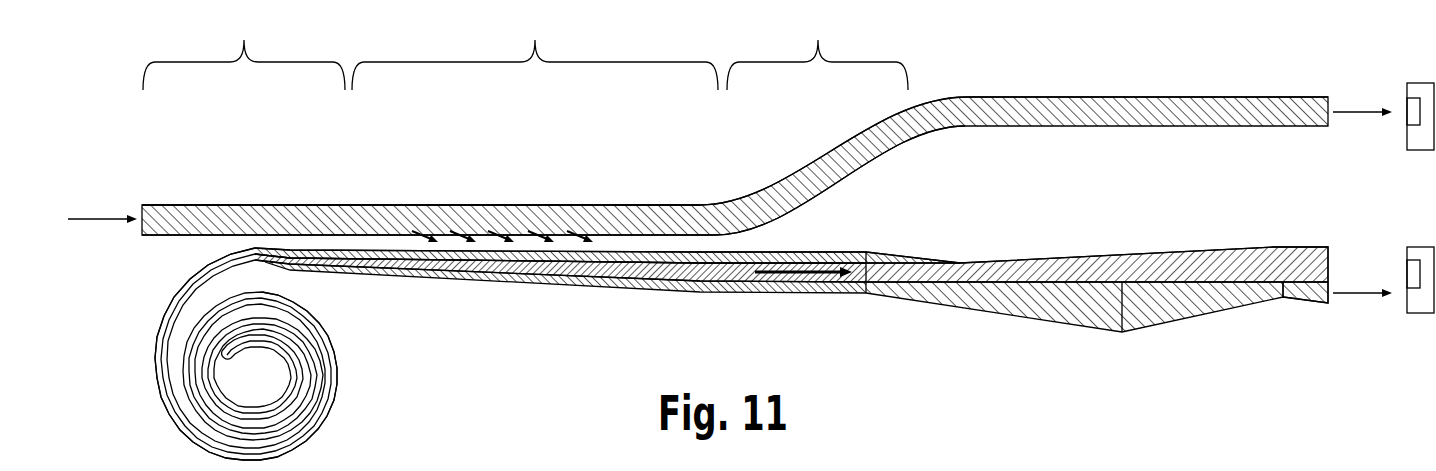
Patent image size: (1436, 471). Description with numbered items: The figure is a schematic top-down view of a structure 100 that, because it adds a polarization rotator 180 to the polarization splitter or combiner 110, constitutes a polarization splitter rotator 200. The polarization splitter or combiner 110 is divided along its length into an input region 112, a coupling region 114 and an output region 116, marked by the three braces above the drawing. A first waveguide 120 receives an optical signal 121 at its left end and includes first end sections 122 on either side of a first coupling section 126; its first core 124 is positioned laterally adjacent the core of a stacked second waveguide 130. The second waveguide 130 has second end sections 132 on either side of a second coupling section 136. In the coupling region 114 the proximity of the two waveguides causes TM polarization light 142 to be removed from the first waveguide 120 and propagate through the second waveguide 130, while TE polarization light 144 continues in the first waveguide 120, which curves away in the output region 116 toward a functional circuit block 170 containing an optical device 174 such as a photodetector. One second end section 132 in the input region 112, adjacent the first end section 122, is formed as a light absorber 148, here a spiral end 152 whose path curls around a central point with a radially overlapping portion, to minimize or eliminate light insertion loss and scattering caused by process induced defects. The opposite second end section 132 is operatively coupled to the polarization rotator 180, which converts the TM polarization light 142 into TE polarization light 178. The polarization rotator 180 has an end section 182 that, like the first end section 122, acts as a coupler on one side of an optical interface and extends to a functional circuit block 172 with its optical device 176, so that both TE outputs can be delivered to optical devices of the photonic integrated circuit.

The structure 100 is at (128, 108).
The polarization splitter rotator 200 is at (130, 110).
The polarization splitter or combiner 110 is at (587, 196).
The input region 112 is at (244, 50).
The coupling region 114 is at (535, 50).
The output region 116 is at (817, 50).
The first waveguide 120 is at (322, 196).
The optical signal 121 is at (90, 219).
The first end section 122 is at (185, 205).
The first core 124 is at (687, 222).
The first coupling section 126 is at (513, 196).
The second waveguide 130 is at (640, 297).
The second end section 132 is at (297, 272).
The second coupling section 136 is at (584, 268).
The TM polarization light 142 is at (803, 277).
The TE polarization light 144 is at (1355, 112).
The light absorber 148 is at (153, 325).
The spiral end 152 is at (152, 412).
The functional circuit block 170 is at (1418, 92).
The functional circuit block 172 is at (1416, 252).
The optical device 174 is at (1413, 115).
The optical device 176 is at (1414, 272).
The TE polarization light 178 is at (1355, 293).
The polarization rotator 180 is at (938, 238).
The end section 182 is at (1313, 297).